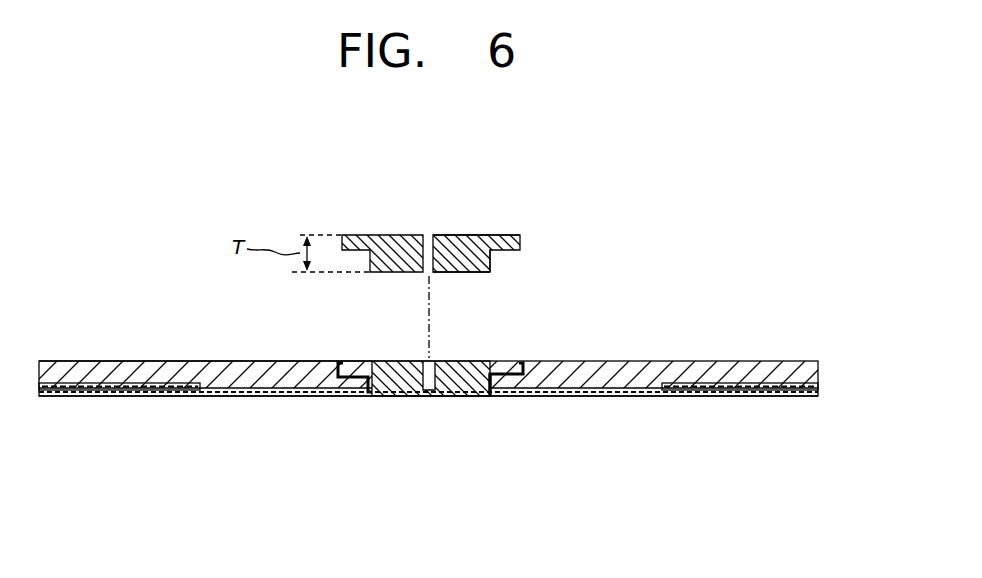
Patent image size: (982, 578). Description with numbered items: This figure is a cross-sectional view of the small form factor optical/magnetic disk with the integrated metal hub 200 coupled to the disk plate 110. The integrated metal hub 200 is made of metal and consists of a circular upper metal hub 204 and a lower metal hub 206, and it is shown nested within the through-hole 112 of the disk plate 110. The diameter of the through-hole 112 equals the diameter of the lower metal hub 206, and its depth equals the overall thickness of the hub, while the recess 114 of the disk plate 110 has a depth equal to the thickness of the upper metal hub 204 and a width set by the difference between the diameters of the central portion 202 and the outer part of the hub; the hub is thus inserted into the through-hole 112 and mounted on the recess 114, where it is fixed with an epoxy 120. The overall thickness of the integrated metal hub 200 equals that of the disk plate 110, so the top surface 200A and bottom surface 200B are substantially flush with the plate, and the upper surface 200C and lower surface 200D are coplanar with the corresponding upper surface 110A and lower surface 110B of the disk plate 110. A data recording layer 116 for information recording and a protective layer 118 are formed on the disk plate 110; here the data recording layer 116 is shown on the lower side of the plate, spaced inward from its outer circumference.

The disk plate 110 is at (776, 360).
The upper surface of the disk plate 110A is at (148, 356).
The lower surface of the disk plate 110B is at (240, 400).
The through-hole 112 is at (382, 397).
The recess 114 is at (520, 362).
The data recording layer 116 is at (700, 398).
The protective layer 118 is at (588, 398).
The epoxy 120 is at (490, 397).
The integrated metal hub 200 is at (532, 222).
The top surface of the integrated metal hub 200A is at (524, 242).
The bottom surface of the integrated metal hub 200B is at (494, 262).
The upper surface of the integrated metal hub 200C is at (462, 231).
The lower surface of the integrated metal hub 200D is at (470, 275).
The central portion 202 is at (418, 358).
The upper metal hub 204 is at (350, 361).
The lower metal hub 206 is at (403, 397).